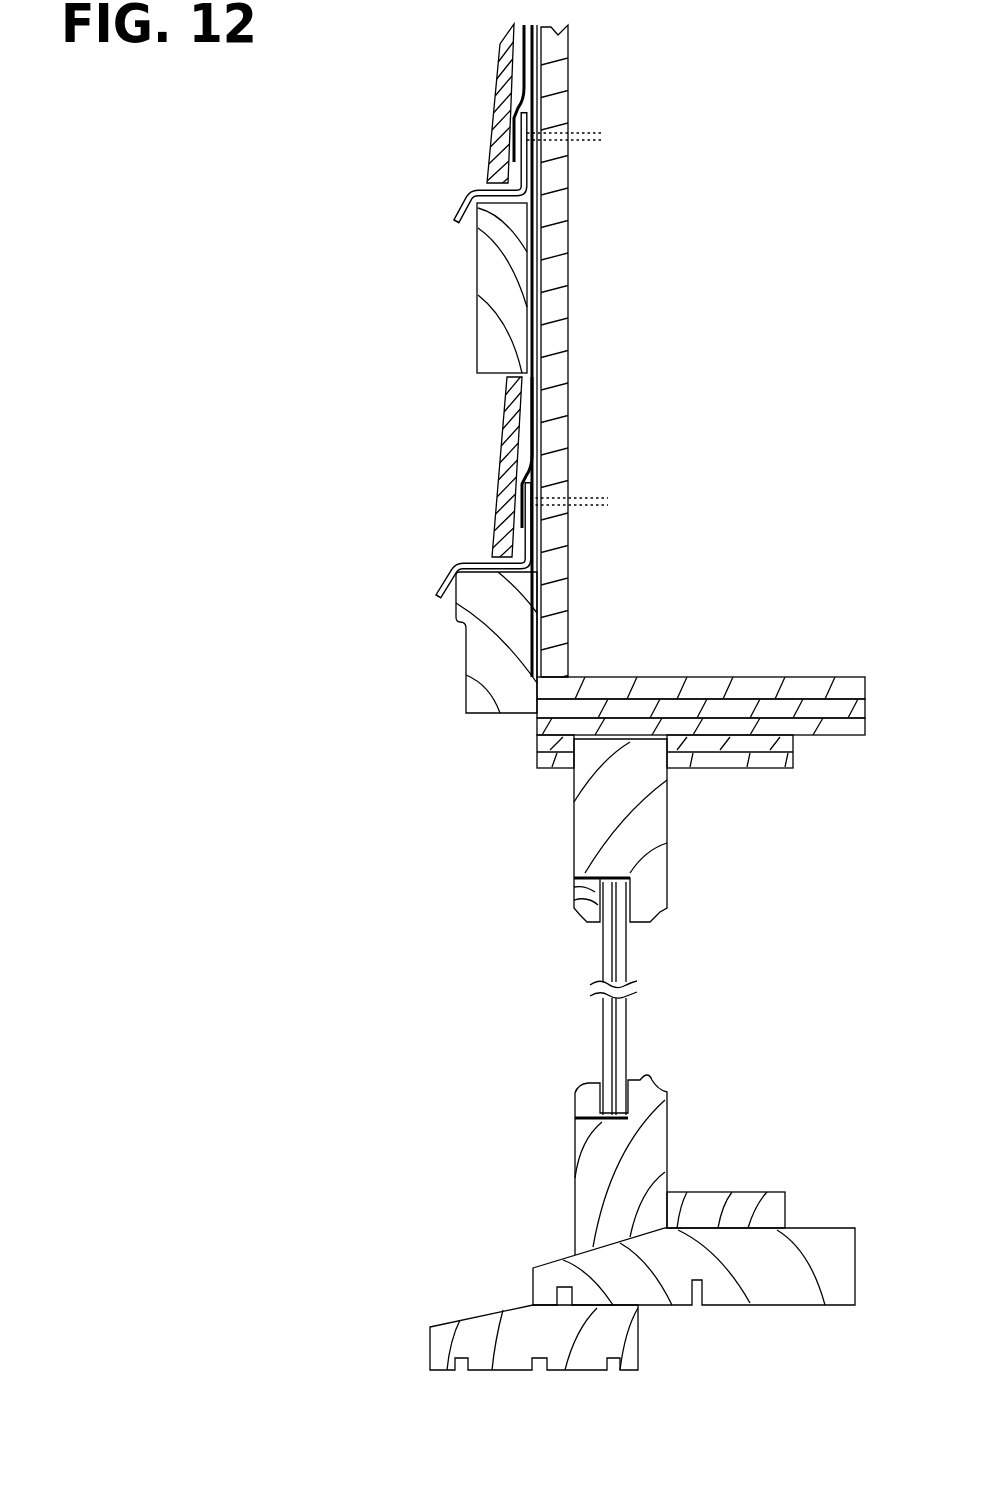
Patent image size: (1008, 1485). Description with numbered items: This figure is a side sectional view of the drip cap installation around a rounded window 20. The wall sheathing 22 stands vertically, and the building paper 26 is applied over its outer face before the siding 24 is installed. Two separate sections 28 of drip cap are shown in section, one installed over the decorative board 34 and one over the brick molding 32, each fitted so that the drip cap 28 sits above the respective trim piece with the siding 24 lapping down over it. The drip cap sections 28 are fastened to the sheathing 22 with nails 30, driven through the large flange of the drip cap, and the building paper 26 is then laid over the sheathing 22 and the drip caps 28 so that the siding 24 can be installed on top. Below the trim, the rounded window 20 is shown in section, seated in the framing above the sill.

The rounded window 20 is at (601, 966).
The sheathing 22 is at (568, 185).
The siding 24 is at (493, 95).
The building paper 26 is at (532, 277).
The drip cap section 28 is at (447, 211).
The nail 30 is at (590, 130).
The brick molding 32 is at (466, 697).
The decorative board 34 is at (476, 320).